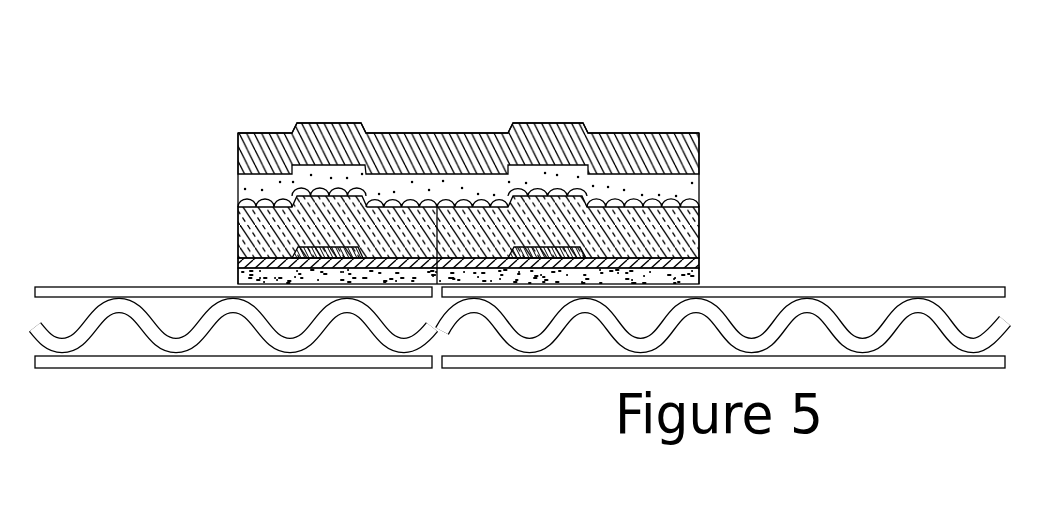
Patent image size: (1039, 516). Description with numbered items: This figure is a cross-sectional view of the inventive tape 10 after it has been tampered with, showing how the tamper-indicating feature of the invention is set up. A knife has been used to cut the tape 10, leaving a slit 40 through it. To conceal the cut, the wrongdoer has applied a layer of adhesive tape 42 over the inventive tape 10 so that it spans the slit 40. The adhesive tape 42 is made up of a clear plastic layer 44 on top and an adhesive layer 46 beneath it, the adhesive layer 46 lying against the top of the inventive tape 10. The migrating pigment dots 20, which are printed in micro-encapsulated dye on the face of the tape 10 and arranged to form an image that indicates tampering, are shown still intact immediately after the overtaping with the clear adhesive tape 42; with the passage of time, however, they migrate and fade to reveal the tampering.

The tape 10 is at (479, 151).
The migrating pigment dots 20 is at (304, 190).
The slit 40 is at (440, 274).
The adhesive tape 42 is at (634, 129).
The clear plastic layer 44 is at (400, 133).
The adhesive layer 46 is at (252, 185).